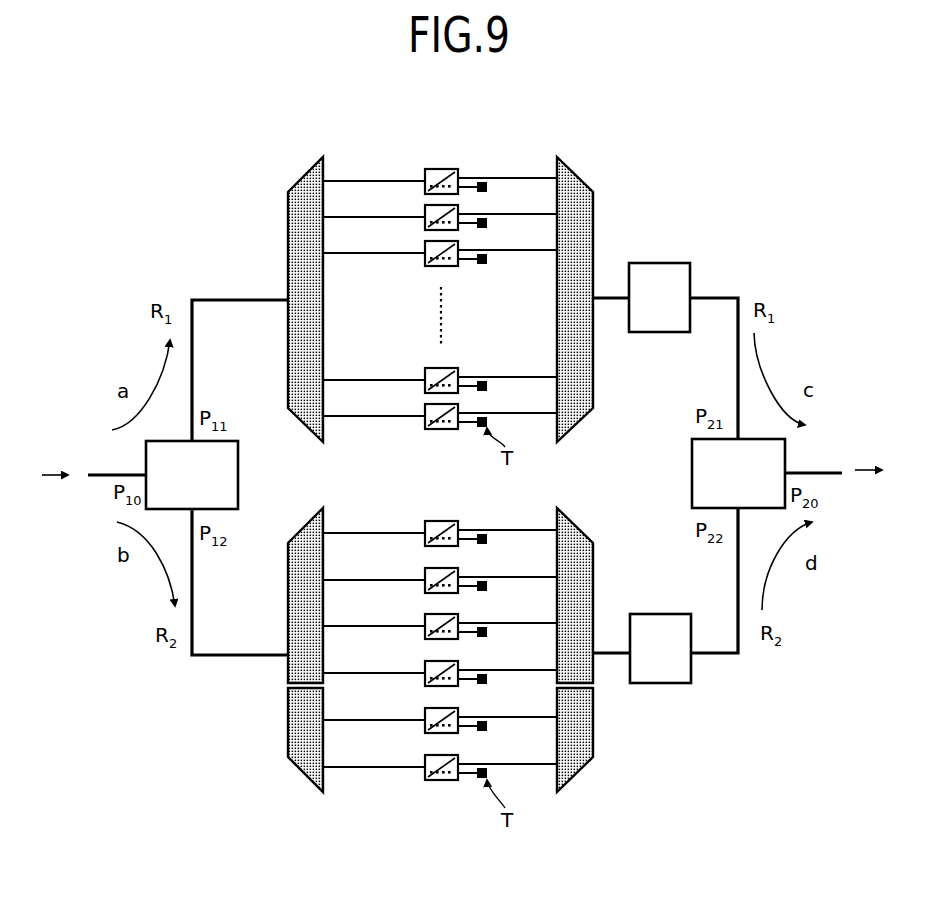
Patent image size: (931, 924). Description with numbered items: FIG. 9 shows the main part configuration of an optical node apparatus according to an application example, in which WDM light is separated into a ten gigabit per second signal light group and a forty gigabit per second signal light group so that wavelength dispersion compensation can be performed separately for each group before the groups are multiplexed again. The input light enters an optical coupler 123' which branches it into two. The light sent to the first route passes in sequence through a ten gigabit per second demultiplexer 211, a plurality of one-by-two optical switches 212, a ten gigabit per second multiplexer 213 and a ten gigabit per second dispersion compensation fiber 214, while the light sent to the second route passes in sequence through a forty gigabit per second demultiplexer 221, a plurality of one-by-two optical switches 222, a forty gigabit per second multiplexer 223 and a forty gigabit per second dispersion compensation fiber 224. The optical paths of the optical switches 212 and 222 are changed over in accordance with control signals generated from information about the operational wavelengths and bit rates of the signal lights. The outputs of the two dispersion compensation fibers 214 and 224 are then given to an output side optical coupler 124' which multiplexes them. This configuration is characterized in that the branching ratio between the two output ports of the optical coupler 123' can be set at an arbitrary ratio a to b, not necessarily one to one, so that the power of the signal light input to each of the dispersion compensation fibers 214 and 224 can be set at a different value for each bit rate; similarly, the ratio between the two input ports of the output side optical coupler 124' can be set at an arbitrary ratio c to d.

The optical coupler 123' is at (218, 475).
The output side optical coupler 124' is at (705, 470).
The 10 Gbit/s demultiplexer 211 is at (288, 237).
The 1×2 optical switches 212 is at (430, 162).
The 10 Gbit/s multiplexer 213 is at (593, 213).
The 10 Gbit/s dispersion compensation fiber 214 is at (660, 263).
The 40 Gbit/s demultiplexer 221 is at (288, 600).
The 1×2 optical switches 222 is at (436, 513).
The 40 Gbit/s multiplexer 223 is at (593, 588).
The 40 Gbit/s dispersion compensation fiber 224 is at (660, 614).